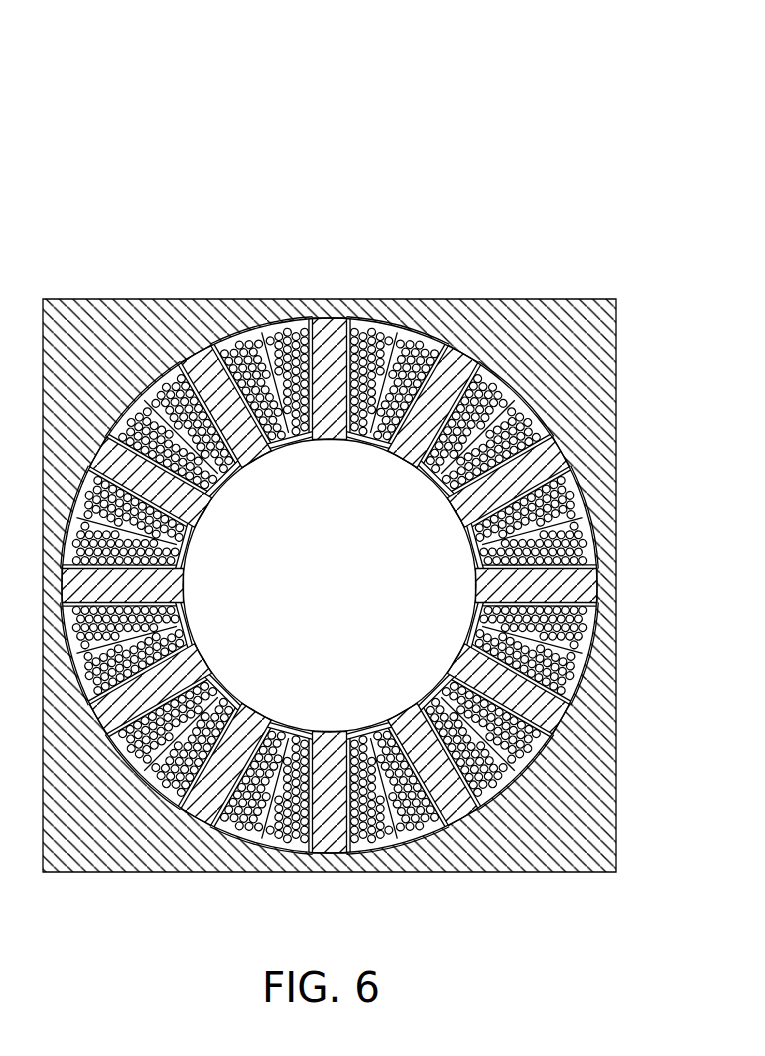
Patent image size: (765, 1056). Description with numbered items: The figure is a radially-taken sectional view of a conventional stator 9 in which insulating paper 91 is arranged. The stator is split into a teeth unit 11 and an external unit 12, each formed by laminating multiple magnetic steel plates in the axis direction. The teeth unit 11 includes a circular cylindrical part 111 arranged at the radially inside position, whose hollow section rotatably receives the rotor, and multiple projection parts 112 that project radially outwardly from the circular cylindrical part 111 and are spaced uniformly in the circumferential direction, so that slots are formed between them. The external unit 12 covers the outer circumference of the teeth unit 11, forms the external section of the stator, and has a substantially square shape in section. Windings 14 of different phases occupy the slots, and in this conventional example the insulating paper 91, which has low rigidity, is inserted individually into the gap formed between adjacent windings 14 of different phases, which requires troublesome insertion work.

The conventional stator 9 is at (600, 116).
The teeth unit 11 is at (330, 505).
The circular cylindrical part 111 is at (413, 457).
The projection part 112 is at (449, 360).
The external unit 12 is at (580, 373).
The winding 14 is at (357, 325).
The insulating paper 91 is at (268, 330).